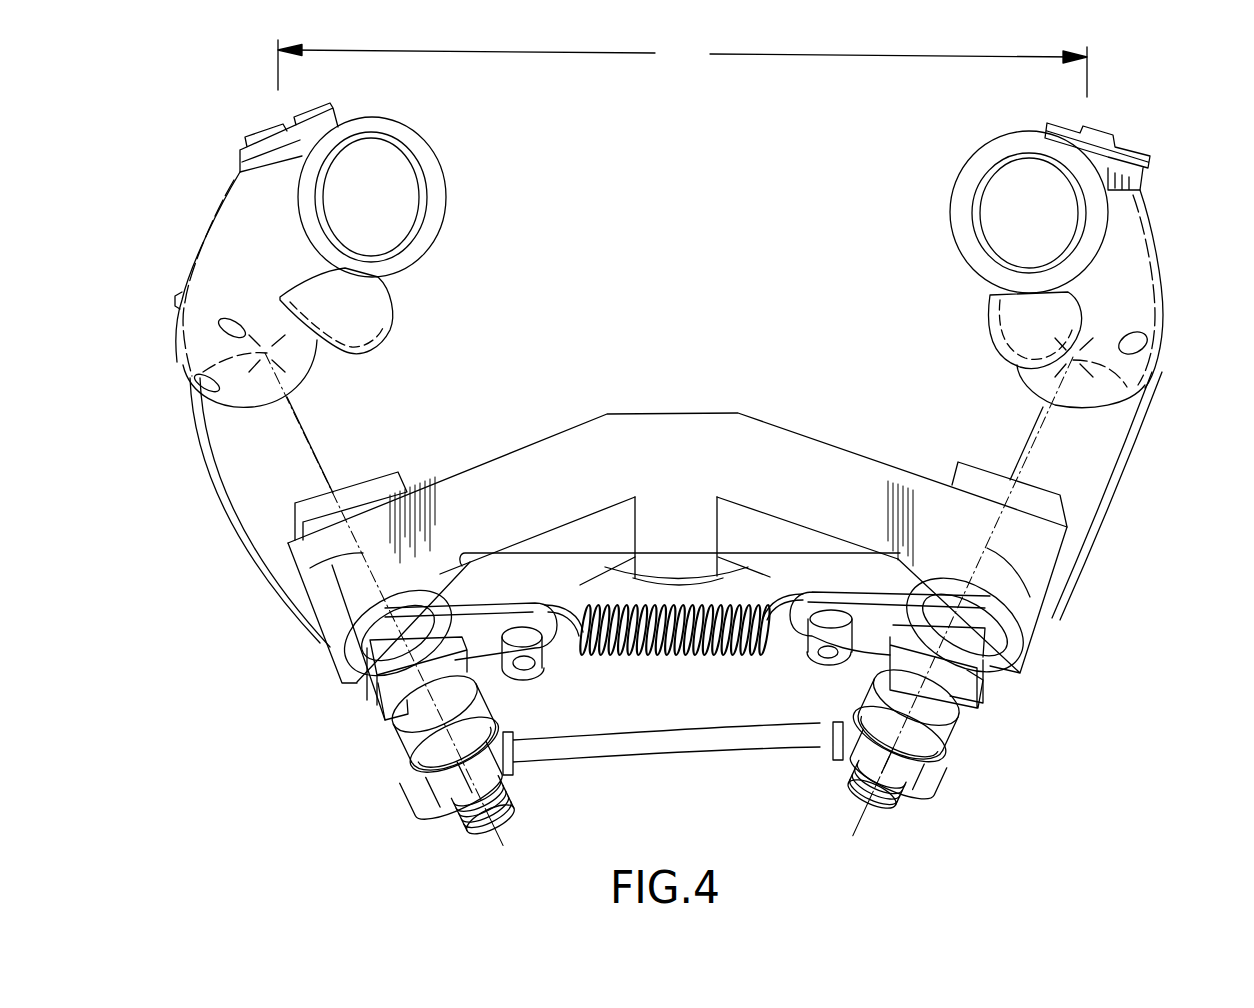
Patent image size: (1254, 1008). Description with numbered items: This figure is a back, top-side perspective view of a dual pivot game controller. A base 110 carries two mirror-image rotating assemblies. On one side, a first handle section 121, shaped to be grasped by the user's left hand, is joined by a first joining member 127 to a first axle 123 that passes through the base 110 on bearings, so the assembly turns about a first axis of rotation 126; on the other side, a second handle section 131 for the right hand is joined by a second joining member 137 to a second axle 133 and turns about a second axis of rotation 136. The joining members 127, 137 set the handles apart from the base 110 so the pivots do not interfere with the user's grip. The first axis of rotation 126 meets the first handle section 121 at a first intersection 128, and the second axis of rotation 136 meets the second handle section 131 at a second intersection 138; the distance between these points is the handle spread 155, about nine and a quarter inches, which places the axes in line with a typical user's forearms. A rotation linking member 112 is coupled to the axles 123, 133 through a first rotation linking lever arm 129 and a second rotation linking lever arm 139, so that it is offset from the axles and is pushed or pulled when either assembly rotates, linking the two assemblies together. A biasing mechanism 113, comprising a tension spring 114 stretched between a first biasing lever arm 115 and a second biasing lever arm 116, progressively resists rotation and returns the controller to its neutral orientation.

The base 110 is at (823, 453).
The rotation linking member 112 is at (597, 752).
The biasing mechanism 113 is at (691, 554).
The tension spring 114 is at (718, 650).
The first biasing lever arm 115 is at (800, 626).
The second biasing lever arm 116 is at (552, 640).
The first handle section 121 is at (1095, 277).
The first axle 123 is at (880, 803).
The first axis of rotation 126 is at (1025, 593).
The first joining member 127 is at (1105, 503).
The first intersection 128 is at (1133, 395).
The first rotation linking lever arm 129 is at (995, 742).
The second handle section 131 is at (274, 255).
The second axle 133 is at (497, 820).
The second axis of rotation 136 is at (307, 578).
The second joining member 137 is at (218, 473).
The second intersection 138 is at (197, 380).
The second rotation linking lever arm 139 is at (383, 740).
The handle spread 155 is at (682, 68).